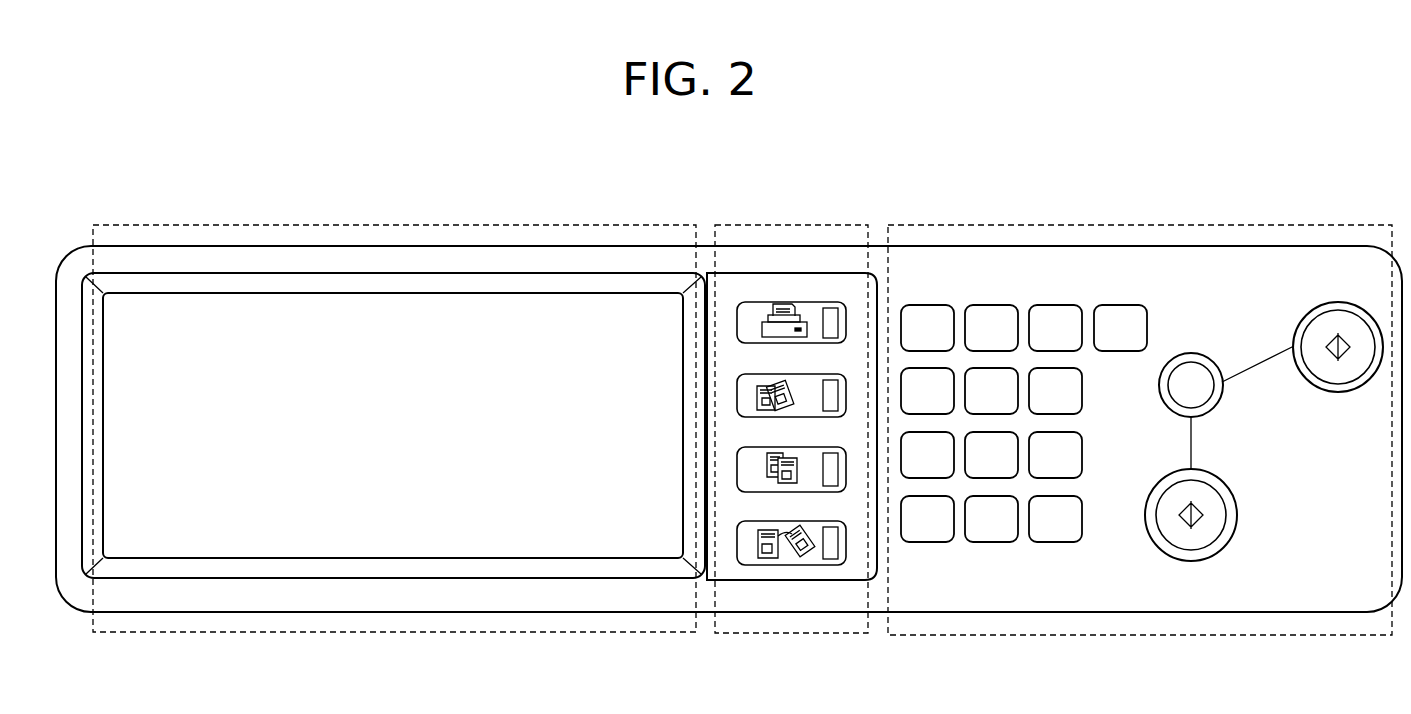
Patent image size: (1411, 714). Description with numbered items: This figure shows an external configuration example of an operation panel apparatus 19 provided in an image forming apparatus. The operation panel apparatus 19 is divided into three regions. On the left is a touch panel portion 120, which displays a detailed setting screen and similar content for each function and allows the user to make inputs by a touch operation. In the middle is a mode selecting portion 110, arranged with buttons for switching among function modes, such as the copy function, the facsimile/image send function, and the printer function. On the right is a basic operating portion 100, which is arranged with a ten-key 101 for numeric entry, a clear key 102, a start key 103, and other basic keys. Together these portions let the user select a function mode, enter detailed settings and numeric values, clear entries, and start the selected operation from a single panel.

The operation panel apparatus 19 is at (878, 246).
The basic operating portion 100 is at (1123, 225).
The ten-key 101 is at (1087, 287).
The clear key 102 is at (1152, 300).
The start key 103 is at (1330, 390).
The mode selecting portion 110 is at (782, 225).
The touch panel portion 120 is at (450, 225).